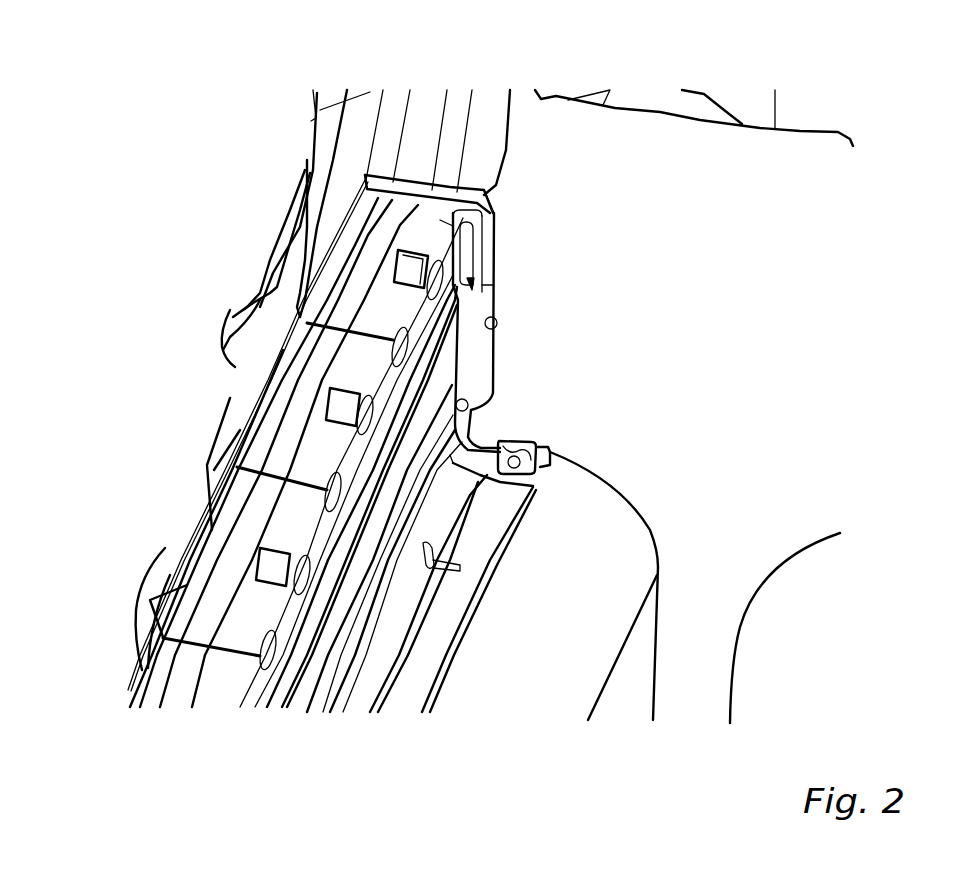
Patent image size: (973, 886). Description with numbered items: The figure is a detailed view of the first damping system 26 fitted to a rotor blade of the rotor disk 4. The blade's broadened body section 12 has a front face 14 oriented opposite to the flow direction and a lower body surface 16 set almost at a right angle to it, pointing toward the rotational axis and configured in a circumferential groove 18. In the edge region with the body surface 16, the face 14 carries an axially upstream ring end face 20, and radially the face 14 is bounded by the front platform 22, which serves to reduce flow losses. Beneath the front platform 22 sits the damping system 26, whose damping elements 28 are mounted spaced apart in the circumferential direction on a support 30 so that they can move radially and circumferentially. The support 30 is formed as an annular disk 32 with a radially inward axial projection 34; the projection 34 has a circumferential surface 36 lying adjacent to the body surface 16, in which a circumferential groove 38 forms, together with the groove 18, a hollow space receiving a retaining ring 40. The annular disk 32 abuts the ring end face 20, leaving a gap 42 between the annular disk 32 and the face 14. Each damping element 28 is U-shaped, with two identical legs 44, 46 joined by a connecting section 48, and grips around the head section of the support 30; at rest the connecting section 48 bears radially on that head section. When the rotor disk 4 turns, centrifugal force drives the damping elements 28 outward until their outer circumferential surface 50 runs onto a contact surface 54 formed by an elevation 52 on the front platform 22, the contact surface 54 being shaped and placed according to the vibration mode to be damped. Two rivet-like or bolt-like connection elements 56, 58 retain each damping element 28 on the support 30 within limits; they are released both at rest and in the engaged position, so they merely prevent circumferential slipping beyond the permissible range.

The rotor disk 4 is at (733, 677).
The body section 12 is at (843, 132).
The front face 14 is at (490, 323).
The lower body surface 16 is at (550, 453).
The circumferential groove 18 is at (533, 447).
The ring end face 20 is at (488, 393).
The front platform 22 is at (445, 196).
The damping system 26 is at (323, 453).
The damping elements 28 is at (287, 608).
The support 30 is at (308, 703).
The annular disk 32 is at (460, 358).
The axial projection 34 is at (530, 477).
The circumferential surface 36 is at (483, 453).
The circumferential groove 38 is at (520, 467).
The retaining ring 40 is at (517, 463).
The gap 42 is at (488, 277).
The leg 44 is at (453, 237).
The leg 46 is at (488, 228).
The connecting section 48 is at (463, 222).
The outer circumferential surface 50 is at (494, 213).
The elevation 52 is at (393, 265).
The contact surface 54 is at (405, 277).
The connection element 56 is at (327, 490).
The connection element 58 is at (263, 653).